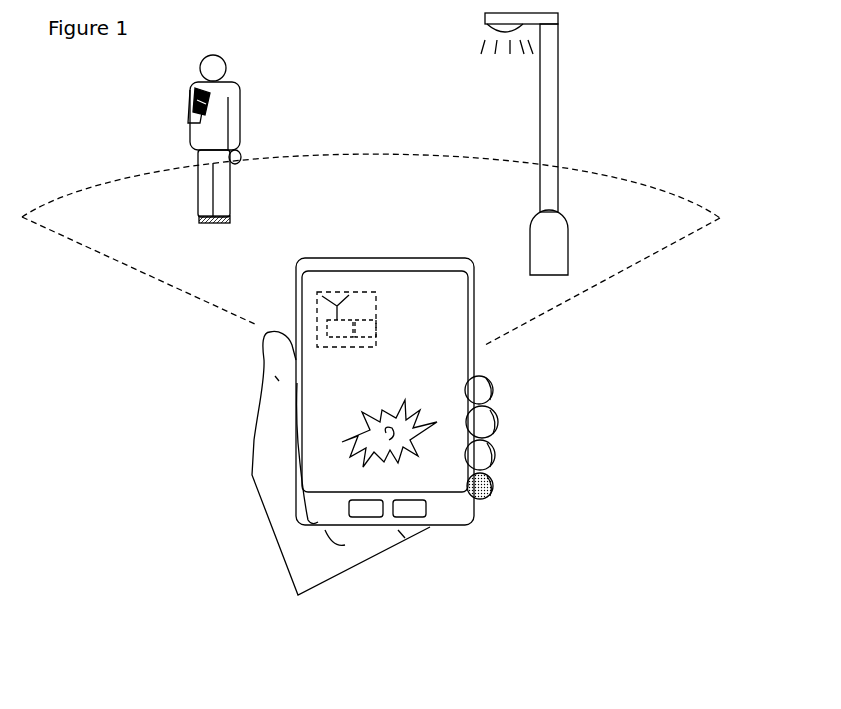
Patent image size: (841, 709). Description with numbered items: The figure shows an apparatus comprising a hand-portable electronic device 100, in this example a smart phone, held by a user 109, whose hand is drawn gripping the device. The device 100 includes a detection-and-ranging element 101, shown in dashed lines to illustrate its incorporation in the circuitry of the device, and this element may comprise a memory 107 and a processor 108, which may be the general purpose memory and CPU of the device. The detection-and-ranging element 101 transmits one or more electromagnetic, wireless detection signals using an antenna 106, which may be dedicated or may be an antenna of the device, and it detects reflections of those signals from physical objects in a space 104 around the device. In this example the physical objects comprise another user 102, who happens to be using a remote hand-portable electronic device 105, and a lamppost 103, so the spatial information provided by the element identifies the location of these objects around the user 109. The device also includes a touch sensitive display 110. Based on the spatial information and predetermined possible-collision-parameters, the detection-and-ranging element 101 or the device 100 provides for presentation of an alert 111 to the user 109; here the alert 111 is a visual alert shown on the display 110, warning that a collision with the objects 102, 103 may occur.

The hand-portable electronic device 100 is at (474, 358).
The detection-and-ranging element 101 is at (317, 323).
The user 102 is at (232, 90).
The lamppost 103 is at (547, 88).
The space 104 is at (107, 250).
The hand-portable electronic device 105 is at (193, 96).
The antenna 106 is at (320, 296).
The memory 107 is at (334, 326).
The processor 108 is at (360, 333).
The user 109 is at (277, 497).
The touch sensitive display 110 is at (443, 463).
The alert 111 is at (393, 447).